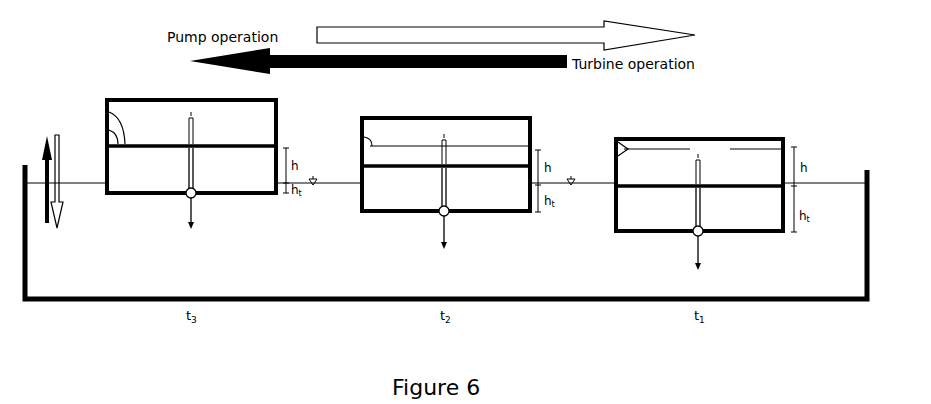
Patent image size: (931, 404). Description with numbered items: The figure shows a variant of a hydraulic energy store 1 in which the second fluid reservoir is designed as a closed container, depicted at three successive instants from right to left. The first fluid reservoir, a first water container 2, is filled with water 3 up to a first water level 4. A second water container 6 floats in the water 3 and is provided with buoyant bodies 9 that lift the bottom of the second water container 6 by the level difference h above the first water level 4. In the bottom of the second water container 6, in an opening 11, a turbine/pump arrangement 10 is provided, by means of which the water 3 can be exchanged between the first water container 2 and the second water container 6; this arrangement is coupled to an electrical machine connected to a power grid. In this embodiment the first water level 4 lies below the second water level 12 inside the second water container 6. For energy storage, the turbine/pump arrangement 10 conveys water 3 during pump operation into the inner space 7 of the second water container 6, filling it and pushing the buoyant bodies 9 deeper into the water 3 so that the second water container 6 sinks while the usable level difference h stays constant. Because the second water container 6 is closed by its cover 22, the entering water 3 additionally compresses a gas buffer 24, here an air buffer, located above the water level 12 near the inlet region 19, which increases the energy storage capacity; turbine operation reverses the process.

The pumped storage system 1 is at (61, 48).
The first water container 2 is at (139, 294).
The water 3 is at (446, 212).
The first water level 4 is at (315, 179).
The second water container 6 is at (104, 195).
The inner space 7 is at (263, 131).
The buoyant bodies 9 is at (477, 188).
The turbine/pump arrangement 10 is at (186, 190).
The opening 11 is at (188, 200).
The second water level 12 is at (109, 113).
The inlet 19 is at (109, 130).
The cover plate 22 is at (222, 100).
The gas buffer 24 is at (728, 141).